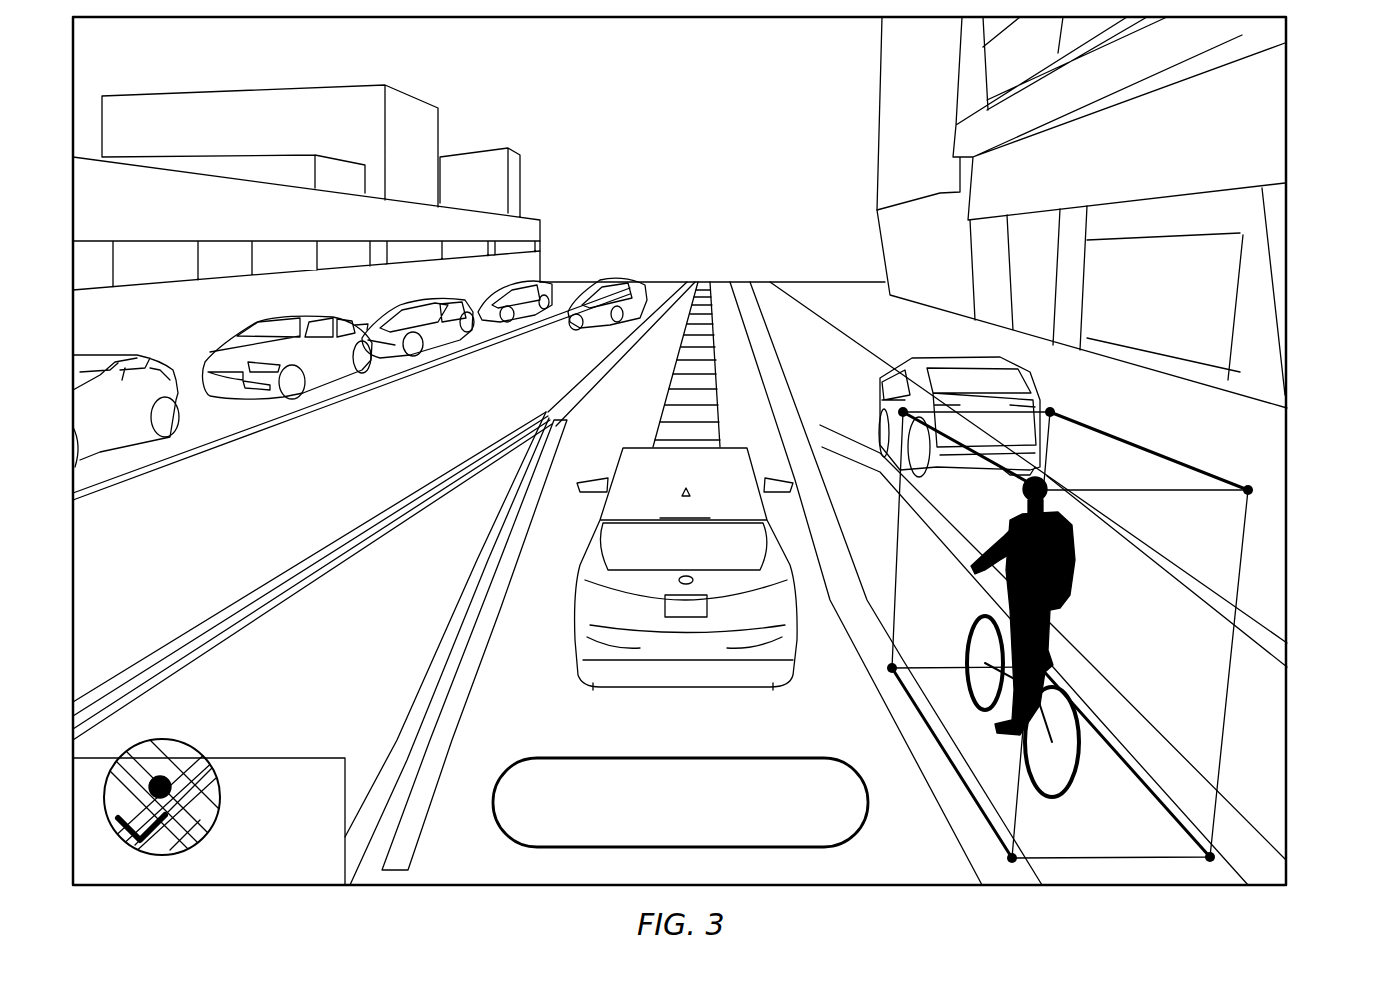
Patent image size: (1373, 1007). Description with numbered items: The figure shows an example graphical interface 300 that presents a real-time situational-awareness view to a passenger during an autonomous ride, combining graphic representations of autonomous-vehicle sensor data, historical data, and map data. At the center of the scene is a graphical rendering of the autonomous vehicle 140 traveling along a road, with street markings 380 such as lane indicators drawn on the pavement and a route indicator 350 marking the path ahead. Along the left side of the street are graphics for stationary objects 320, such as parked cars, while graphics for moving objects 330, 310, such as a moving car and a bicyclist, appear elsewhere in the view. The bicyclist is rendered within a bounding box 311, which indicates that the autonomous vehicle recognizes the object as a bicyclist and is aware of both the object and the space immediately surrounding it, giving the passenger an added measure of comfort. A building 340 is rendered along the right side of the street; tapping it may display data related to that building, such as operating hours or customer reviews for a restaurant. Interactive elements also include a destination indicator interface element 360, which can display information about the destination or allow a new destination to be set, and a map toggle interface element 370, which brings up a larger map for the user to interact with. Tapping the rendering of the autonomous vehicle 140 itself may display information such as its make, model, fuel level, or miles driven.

The graphical interface 300 is at (1287, 115).
The autonomous vehicle 140 is at (642, 455).
The moving object 310 is at (1060, 573).
The bounding box 311 is at (1172, 430).
The stationary objects 320 is at (272, 323).
The moving object 330 is at (615, 283).
The building 340 is at (1198, 147).
The route indicator 350 is at (697, 300).
The destination indicator interface element 360 is at (567, 780).
The map toggle interface element 370 is at (207, 798).
The street markings 380 is at (540, 417).